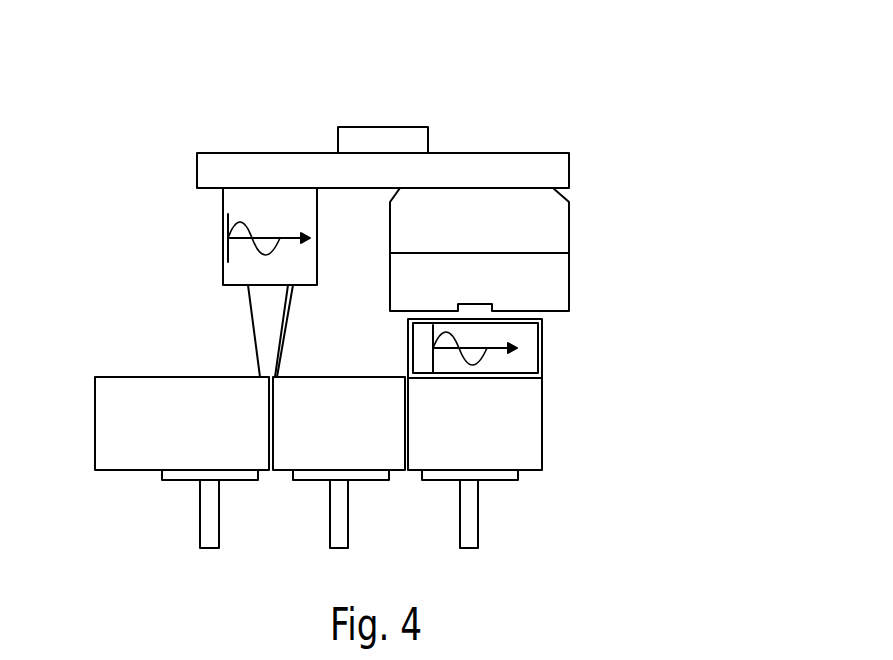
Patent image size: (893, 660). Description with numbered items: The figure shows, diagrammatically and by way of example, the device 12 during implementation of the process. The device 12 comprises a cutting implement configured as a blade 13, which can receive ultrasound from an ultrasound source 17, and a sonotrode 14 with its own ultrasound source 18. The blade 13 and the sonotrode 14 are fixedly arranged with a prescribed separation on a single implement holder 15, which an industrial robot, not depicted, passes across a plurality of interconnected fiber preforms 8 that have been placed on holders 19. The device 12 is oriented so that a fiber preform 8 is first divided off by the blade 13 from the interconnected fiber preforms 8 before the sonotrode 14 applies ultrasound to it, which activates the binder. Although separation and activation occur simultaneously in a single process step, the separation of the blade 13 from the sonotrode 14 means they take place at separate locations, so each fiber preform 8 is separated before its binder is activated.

The fiber preform 8 is at (122, 453).
The device 12 is at (627, 302).
The blade 13 is at (265, 338).
The sonotrode 14 is at (543, 348).
The implement holder 15 is at (493, 166).
The ultrasound source 17 is at (222, 265).
The ultrasound source 18 is at (567, 264).
The holder 19 is at (188, 473).